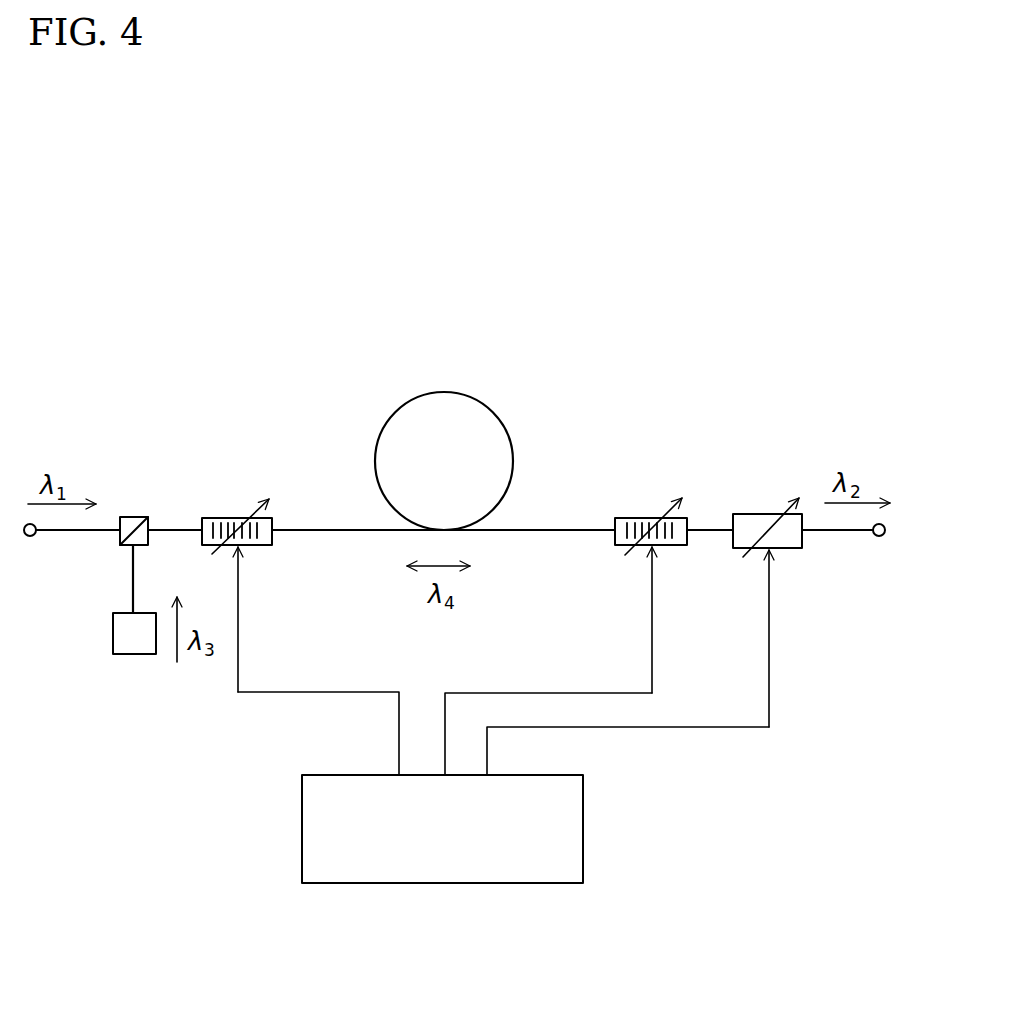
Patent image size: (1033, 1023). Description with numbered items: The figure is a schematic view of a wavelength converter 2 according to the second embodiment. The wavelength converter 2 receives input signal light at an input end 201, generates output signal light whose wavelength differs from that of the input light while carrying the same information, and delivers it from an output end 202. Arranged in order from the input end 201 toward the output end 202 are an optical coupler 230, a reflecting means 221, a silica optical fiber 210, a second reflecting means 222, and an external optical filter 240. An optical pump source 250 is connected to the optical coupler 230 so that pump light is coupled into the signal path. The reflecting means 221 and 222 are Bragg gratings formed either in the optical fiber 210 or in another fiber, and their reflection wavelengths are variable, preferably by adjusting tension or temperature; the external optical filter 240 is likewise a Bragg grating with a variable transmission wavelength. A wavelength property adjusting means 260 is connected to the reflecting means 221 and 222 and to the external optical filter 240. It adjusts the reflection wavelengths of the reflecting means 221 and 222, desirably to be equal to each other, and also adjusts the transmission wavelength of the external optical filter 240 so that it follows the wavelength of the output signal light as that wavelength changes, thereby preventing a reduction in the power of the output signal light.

The wavelength converter 2 is at (343, 357).
The input end 201 is at (30, 540).
The output end 202 is at (880, 540).
The silica optical fiber 210 is at (480, 397).
The reflecting means 221 is at (240, 517).
The reflecting means 222 is at (647, 518).
The optical coupler 230 is at (133, 517).
The external optical filter 240 is at (771, 514).
The optical pump source 250 is at (132, 654).
The wavelength property adjusting means 260 is at (583, 800).